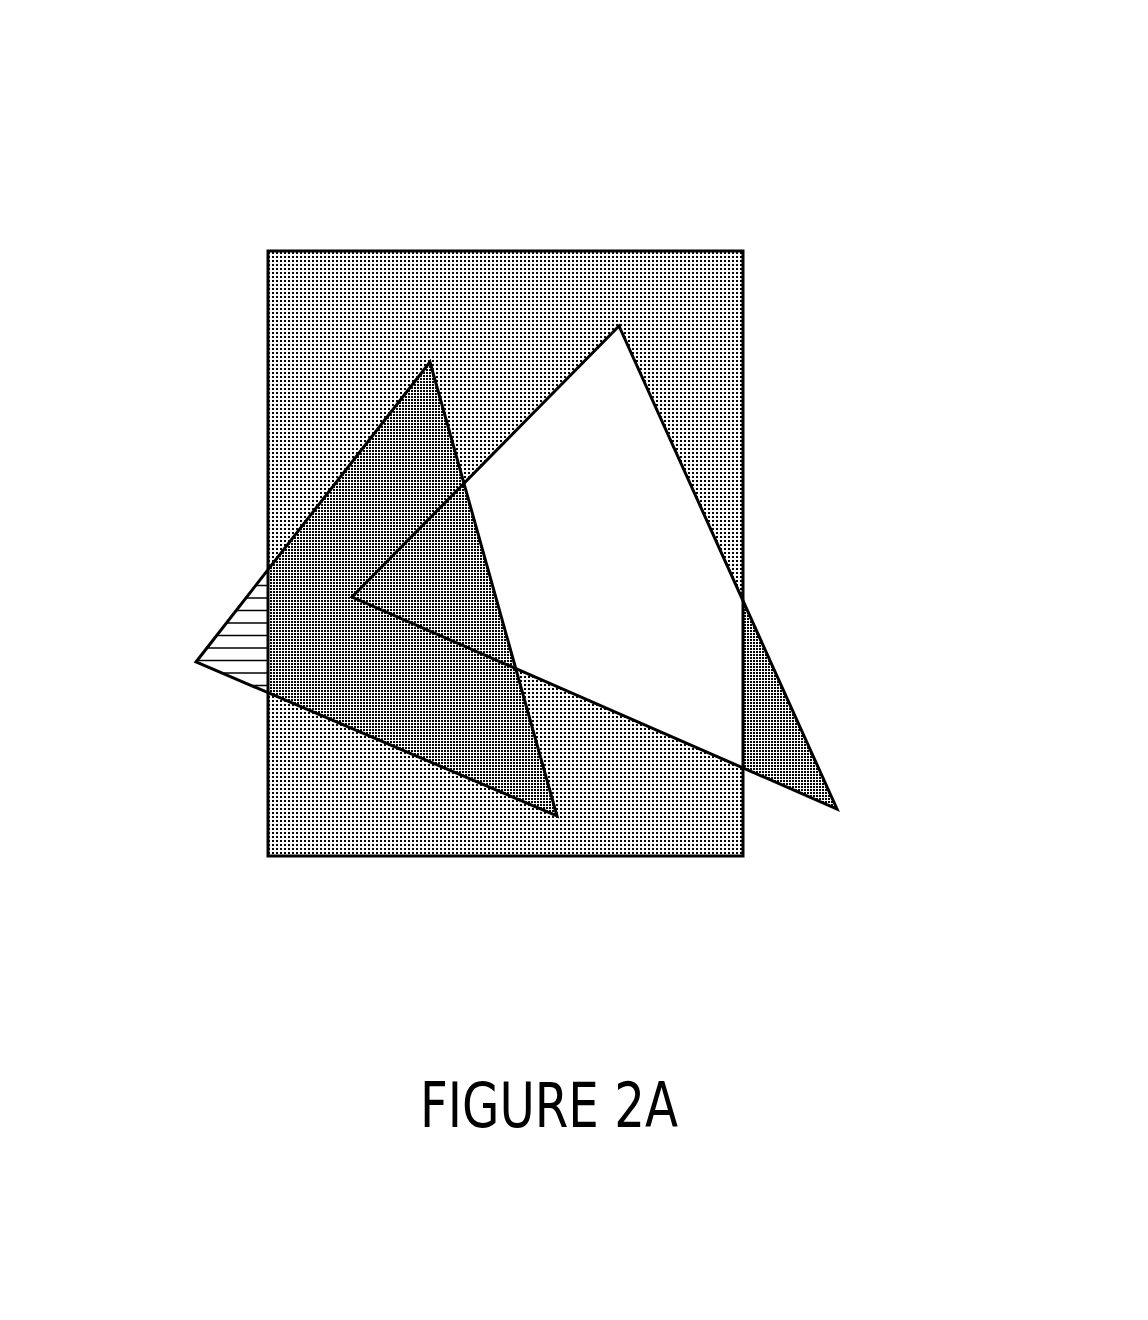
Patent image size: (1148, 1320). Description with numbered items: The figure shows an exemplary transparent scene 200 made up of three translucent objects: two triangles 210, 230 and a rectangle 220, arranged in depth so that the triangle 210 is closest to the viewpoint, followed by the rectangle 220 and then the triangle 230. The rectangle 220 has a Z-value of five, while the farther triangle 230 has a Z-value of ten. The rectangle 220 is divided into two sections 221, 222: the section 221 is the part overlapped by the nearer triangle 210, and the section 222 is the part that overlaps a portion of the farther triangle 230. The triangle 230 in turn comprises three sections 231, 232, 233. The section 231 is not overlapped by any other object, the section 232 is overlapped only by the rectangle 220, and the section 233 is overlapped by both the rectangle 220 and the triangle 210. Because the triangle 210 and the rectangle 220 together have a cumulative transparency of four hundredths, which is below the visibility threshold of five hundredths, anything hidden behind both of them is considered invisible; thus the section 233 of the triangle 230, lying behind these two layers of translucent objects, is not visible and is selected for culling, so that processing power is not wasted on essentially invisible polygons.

The transparent scene 200 is at (735, 103).
The triangle 210 is at (242, 605).
The rectangle 220 is at (557, 251).
The section 221 is at (364, 684).
The section 222 is at (728, 453).
The triangle 230 is at (763, 645).
The section 231 is at (782, 743).
The section 232 is at (698, 587).
The section 233 is at (448, 598).